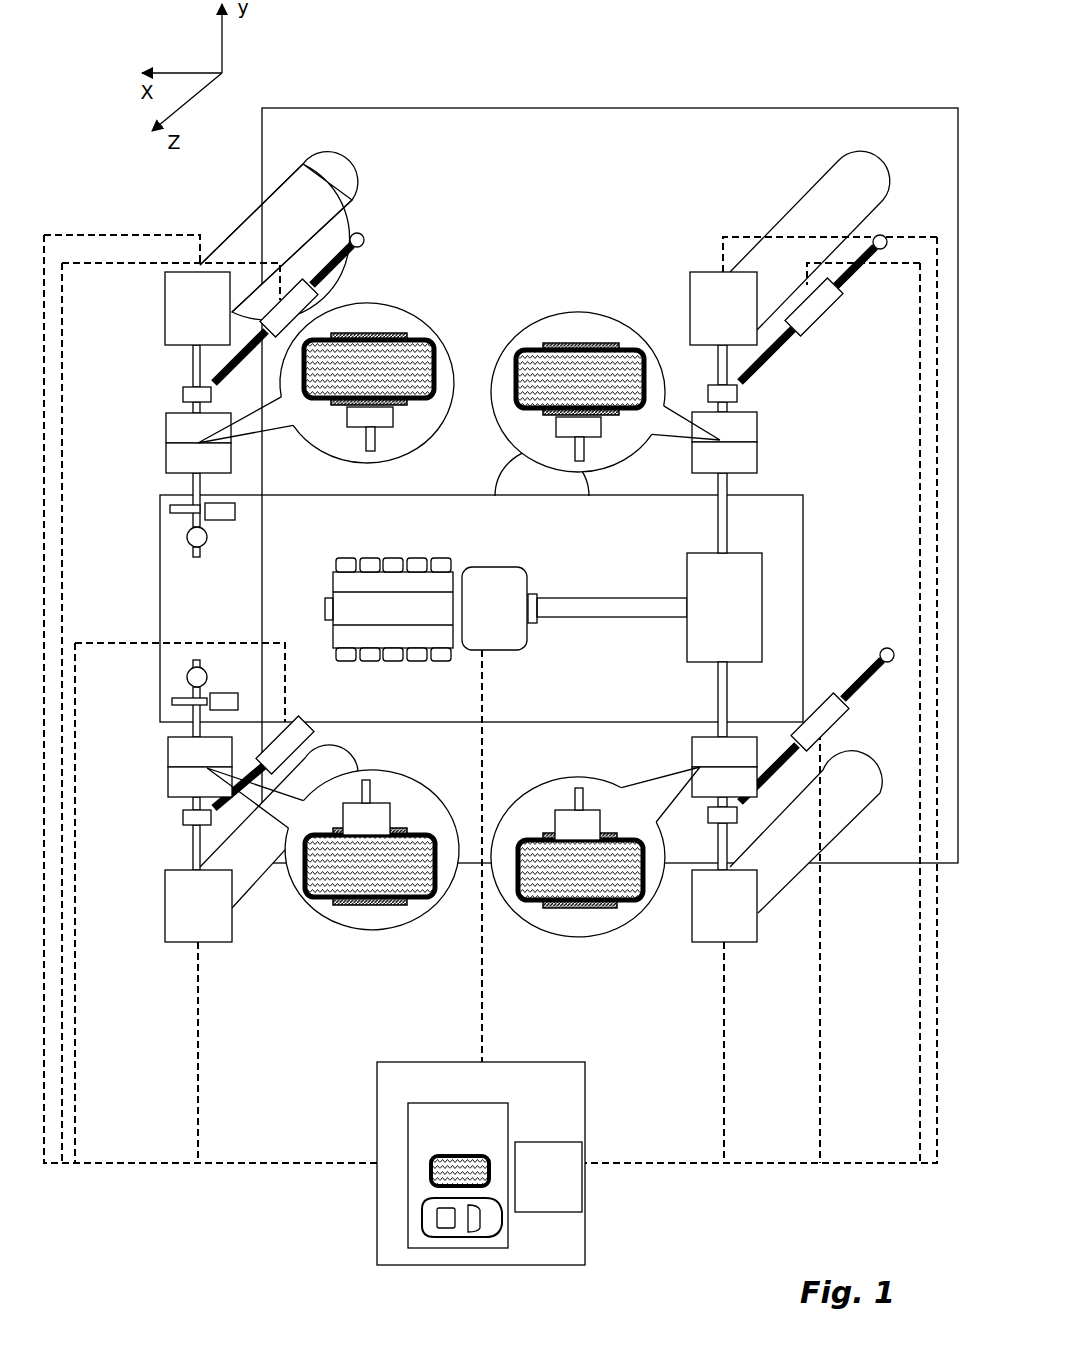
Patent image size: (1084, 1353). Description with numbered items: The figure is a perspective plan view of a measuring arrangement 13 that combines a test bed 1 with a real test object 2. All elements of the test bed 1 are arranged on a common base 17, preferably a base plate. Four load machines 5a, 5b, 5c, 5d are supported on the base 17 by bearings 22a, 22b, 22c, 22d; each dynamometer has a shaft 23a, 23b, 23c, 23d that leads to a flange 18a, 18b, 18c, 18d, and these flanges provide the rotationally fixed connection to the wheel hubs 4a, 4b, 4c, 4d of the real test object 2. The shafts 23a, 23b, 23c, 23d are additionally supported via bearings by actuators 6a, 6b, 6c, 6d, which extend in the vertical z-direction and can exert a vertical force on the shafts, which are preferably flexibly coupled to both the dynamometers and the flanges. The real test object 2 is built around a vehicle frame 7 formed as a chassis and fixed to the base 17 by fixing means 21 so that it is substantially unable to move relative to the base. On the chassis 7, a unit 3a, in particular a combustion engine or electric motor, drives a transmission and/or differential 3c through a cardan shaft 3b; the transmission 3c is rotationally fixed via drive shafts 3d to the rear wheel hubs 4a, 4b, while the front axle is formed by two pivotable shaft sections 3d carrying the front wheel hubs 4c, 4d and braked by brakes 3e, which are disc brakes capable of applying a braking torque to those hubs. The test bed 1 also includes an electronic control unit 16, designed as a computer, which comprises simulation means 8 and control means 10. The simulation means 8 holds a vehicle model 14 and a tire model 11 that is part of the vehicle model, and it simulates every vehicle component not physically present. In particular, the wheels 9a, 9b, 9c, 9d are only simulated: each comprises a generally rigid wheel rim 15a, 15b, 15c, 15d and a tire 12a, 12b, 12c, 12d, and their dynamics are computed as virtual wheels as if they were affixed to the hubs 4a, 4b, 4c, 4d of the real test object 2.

The test bed 1 is at (600, 104).
The real test object 2 is at (158, 588).
The unit 3a is at (405, 630).
The cardan shaft 3b is at (548, 597).
The transmission and/or differential 3c is at (710, 618).
The drive shafts / shaft sections 3d is at (194, 485).
The brakes 3e is at (172, 510).
The wheel hub 4a is at (752, 455).
The wheel hub 4b is at (705, 745).
The wheel hub 4c is at (170, 757).
The wheel hub 4d is at (170, 452).
The load machine 5a is at (710, 318).
The load machine 5b is at (711, 916).
The load machine 5c is at (185, 916).
The load machine 5d is at (185, 318).
The actuator 6a is at (815, 305).
The actuator 6b is at (830, 712).
The actuator 6c is at (284, 722).
The actuator 6d is at (298, 292).
The vehicle frame 7 is at (563, 683).
The simulation means 8 is at (451, 1141).
The wheel 9a is at (551, 340).
The wheel 9b is at (575, 906).
The wheel 9c is at (380, 906).
The wheel 9d is at (402, 332).
The control means 10 is at (535, 1189).
The tire model 11 is at (430, 1165).
The tire 12a is at (526, 352).
The tire 12b is at (538, 848).
The tire 12c is at (318, 893).
The tire 12d is at (430, 400).
The measuring arrangement 13 is at (97, 183).
The vehicle model 14 is at (468, 1228).
The wheel rim 15a is at (588, 350).
The wheel rim 15b is at (612, 905).
The wheel rim 15c is at (400, 900).
The wheel rim 15d is at (366, 333).
The electronic control unit 16 is at (467, 1093).
The base 17 is at (692, 198).
The flange 18a is at (752, 425).
The flange 18b is at (752, 790).
The flange 18c is at (170, 790).
The flange 18d is at (170, 432).
The fixing means 21 is at (515, 492).
The bearing 22a is at (836, 201).
The bearing 22b is at (838, 791).
The bearing 22c is at (236, 866).
The bearing 22d is at (303, 201).
The shaft 23a is at (717, 353).
The shaft 23b is at (717, 853).
The shaft 23c is at (192, 840).
The shaft 23d is at (195, 372).